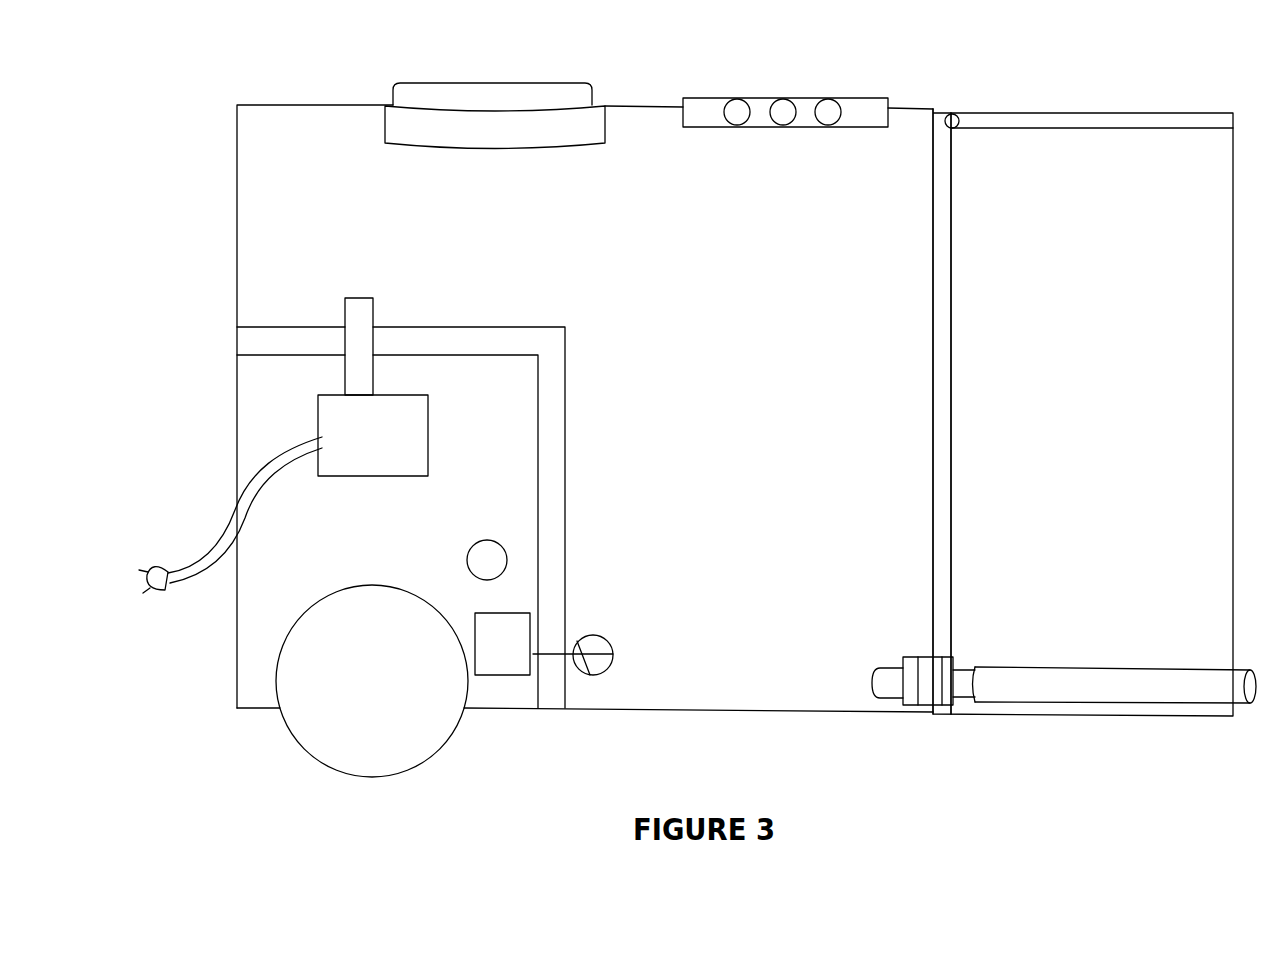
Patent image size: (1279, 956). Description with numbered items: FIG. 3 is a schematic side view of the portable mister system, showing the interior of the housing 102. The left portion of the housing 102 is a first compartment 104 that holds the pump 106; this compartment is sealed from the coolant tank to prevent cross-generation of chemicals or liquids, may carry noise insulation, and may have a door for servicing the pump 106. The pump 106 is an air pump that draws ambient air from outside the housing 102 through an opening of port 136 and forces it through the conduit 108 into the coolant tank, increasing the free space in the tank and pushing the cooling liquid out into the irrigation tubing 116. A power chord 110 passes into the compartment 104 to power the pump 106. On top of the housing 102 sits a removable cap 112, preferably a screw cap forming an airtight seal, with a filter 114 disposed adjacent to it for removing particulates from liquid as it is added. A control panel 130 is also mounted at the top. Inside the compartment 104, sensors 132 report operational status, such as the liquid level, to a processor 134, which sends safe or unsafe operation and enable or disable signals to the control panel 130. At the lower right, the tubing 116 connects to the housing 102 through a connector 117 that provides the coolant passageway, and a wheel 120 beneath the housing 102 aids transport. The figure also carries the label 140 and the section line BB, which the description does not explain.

The housing 102 is at (327, 126).
The compartment 104 is at (257, 614).
The pump 106 is at (430, 436).
The conduit 108 is at (370, 307).
The power chord 110 is at (212, 514).
The removable cap 112 is at (596, 90).
The filter 114 is at (603, 150).
The irrigation tubing 116 is at (1112, 685).
The connector 117 is at (914, 662).
The wheels 120 is at (450, 744).
The control panel 130 is at (808, 91).
The sensors 132 is at (600, 638).
The processor 134 is at (476, 613).
The port 136 is at (485, 554).
The tank housing 140 is at (943, 324).
The section line BB is at (985, 512).